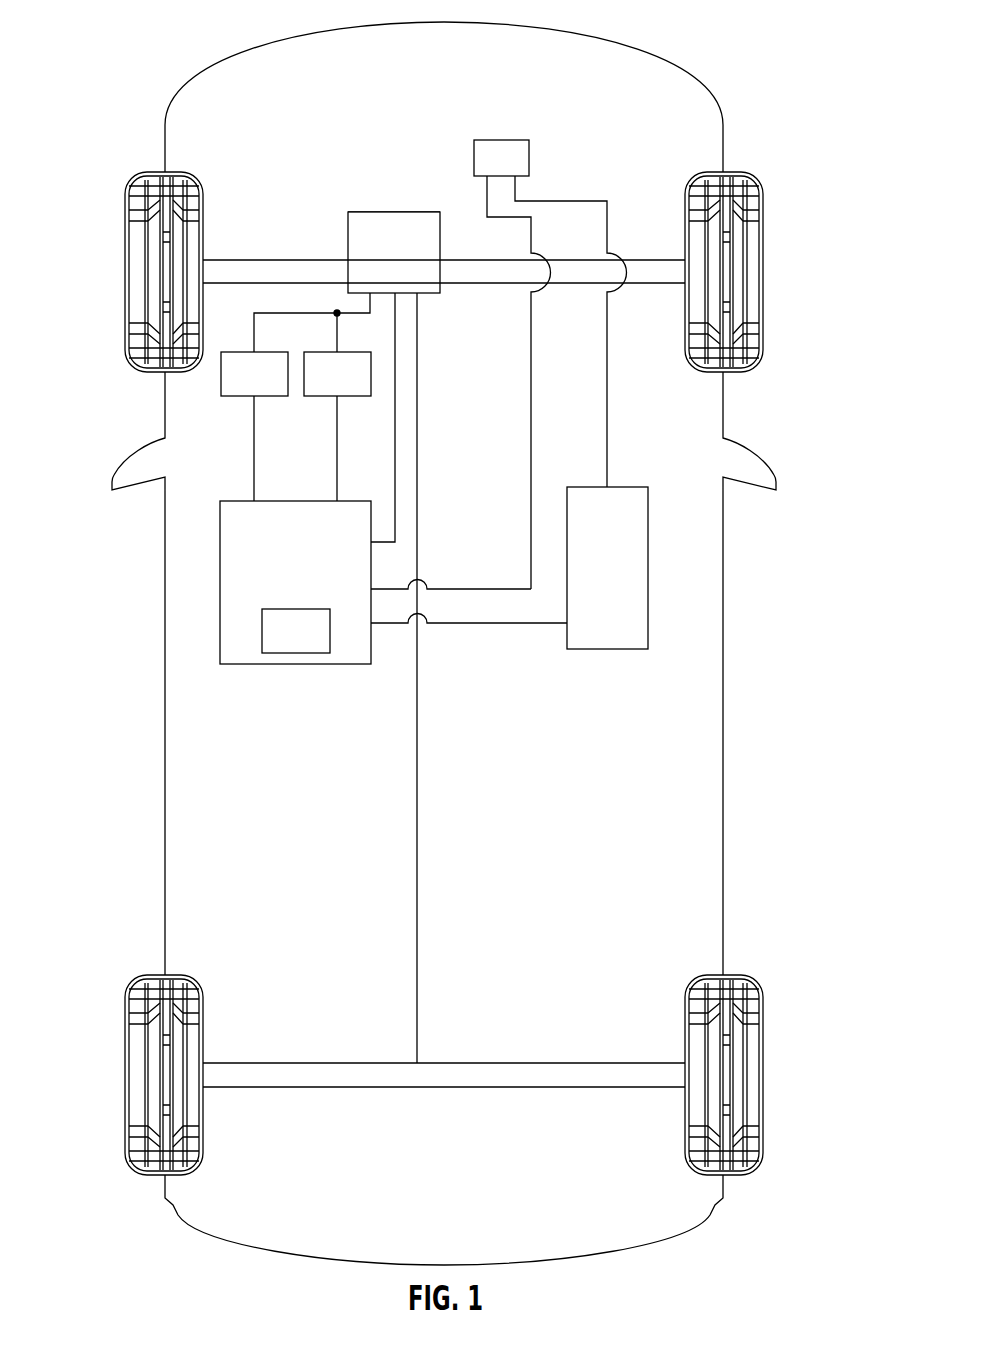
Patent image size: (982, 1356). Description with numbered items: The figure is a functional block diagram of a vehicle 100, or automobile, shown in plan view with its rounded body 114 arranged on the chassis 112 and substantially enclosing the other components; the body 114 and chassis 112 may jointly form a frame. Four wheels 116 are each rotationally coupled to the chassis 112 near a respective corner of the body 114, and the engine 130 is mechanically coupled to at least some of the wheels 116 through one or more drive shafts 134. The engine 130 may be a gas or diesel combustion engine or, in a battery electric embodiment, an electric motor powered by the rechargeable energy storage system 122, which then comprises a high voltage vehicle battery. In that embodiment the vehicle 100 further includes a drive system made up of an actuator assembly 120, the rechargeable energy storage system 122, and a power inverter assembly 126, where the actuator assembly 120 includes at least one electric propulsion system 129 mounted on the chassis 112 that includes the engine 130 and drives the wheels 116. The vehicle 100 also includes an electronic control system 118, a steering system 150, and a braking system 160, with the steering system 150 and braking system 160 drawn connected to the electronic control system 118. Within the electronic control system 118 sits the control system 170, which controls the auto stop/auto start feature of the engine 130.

The vehicle 100 is at (155, 42).
The chassis 112 is at (417, 873).
The body 114 is at (164, 655).
The wheels 116 is at (122, 272).
The electronic control system 118 is at (313, 579).
The actuator assembly 120 is at (439, 318).
The rechargeable energy storage system 122 is at (624, 579).
The power inverter assembly 126 is at (519, 173).
The electric propulsion system 129 is at (398, 212).
The engine 130 is at (413, 250).
The drive shafts 134 is at (262, 258).
The steering system 150 is at (272, 389).
The braking system 160 is at (355, 389).
The control system 170 is at (314, 646).